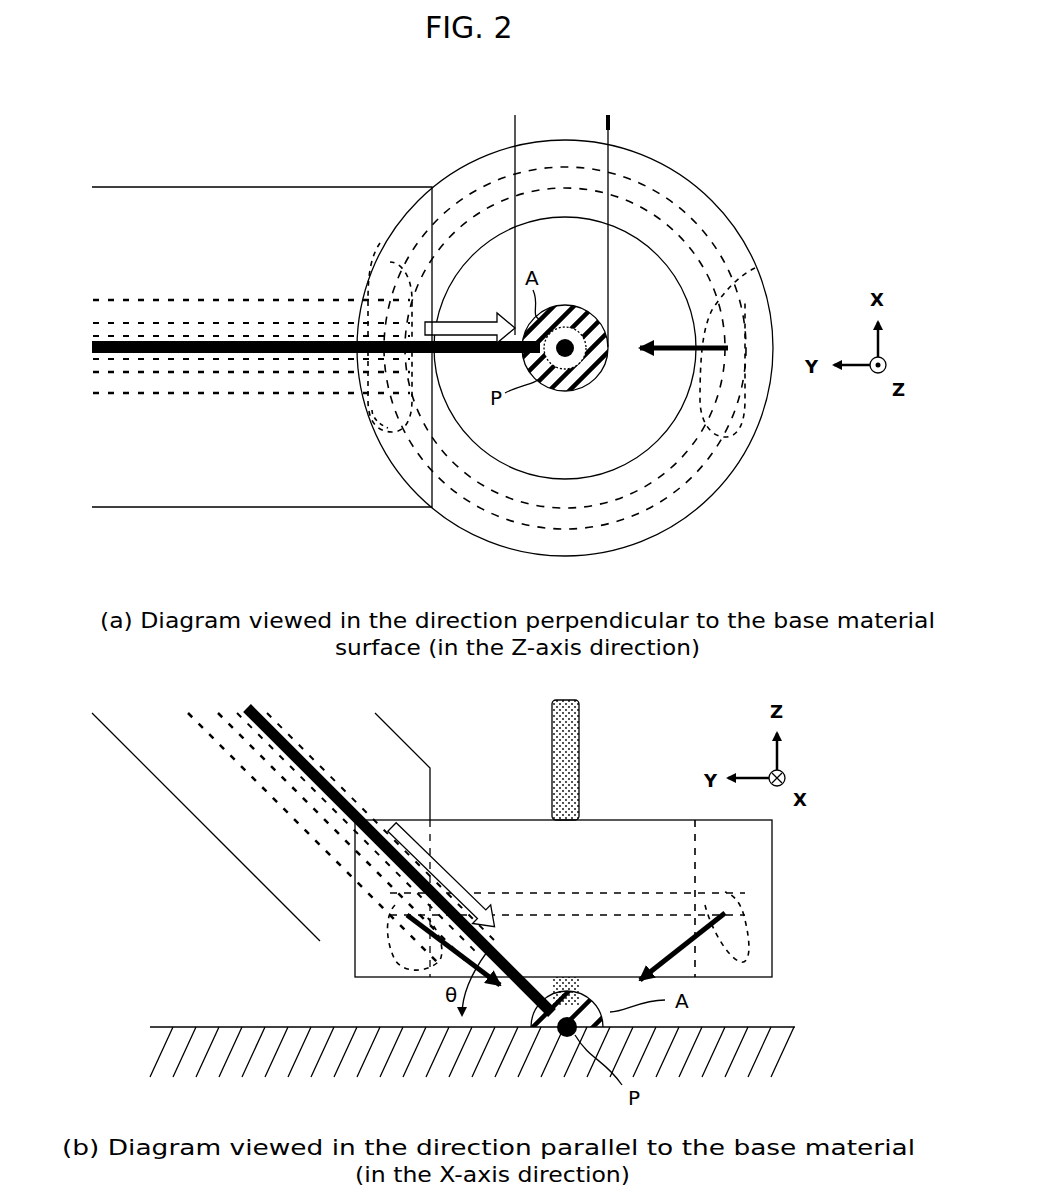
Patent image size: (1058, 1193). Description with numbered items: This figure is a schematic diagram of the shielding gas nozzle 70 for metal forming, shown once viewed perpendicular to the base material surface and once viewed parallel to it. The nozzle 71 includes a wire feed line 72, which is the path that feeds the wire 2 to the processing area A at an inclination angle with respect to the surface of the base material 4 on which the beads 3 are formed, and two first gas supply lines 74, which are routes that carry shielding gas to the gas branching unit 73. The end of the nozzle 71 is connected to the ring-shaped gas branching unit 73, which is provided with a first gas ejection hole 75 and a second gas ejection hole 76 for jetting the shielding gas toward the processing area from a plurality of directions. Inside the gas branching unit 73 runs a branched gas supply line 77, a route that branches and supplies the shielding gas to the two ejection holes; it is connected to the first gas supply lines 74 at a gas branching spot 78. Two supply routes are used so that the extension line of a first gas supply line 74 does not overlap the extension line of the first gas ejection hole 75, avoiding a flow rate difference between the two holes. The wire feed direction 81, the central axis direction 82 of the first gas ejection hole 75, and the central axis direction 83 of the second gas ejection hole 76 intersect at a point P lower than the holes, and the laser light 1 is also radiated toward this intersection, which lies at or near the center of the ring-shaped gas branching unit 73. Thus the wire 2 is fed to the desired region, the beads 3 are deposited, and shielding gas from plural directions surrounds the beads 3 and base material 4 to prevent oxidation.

The laser light 1 is at (610, 330).
The wire 2 is at (133, 393).
The beads 3 is at (612, 262).
The base material 4 is at (200, 1025).
The shielding gas nozzle for metal forming 70 is at (830, 242).
The nozzle 71 is at (140, 507).
The wire feed line 72 is at (258, 336).
The gas branching unit 73 is at (708, 495).
The first gas supply lines 74 is at (175, 300).
The first gas ejection hole 75 is at (380, 243).
The second gas ejection hole 76 is at (755, 268).
The branched gas supply line 77 is at (725, 425).
The gas branching spot 78 is at (380, 425).
The wire feed direction 81 is at (455, 322).
The central axis direction of the first gas ejection hole 82 is at (445, 970).
The central axis direction of the second gas ejection hole 83 is at (672, 352).